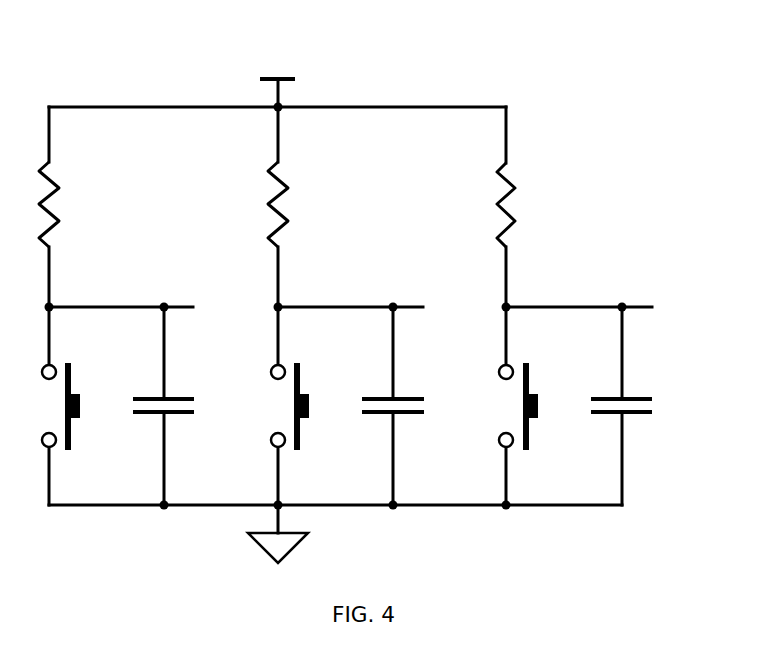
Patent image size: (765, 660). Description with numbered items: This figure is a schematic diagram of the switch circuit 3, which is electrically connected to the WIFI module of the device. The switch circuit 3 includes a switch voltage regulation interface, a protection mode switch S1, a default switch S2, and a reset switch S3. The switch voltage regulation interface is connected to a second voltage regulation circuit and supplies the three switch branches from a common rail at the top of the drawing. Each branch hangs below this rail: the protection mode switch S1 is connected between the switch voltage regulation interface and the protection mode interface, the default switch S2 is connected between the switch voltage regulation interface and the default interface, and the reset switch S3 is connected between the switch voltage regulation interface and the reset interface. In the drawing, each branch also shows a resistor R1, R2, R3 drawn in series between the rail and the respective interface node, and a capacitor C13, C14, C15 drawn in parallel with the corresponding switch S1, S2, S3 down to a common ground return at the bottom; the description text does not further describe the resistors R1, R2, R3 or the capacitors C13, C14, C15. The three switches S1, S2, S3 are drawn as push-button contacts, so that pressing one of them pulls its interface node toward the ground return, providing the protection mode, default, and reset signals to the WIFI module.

The switch circuit 3 is at (230, 48).
The pull-up resistor 10K R1 is at (68, 204).
The pull-up resistor 10K R2 is at (297, 204).
The pull-up resistor 10K R3 is at (526, 205).
The protection mode switch S1 is at (72, 406).
The default switch S2 is at (301, 406).
The reset switch S3 is at (530, 406).
The debounce capacitor 0.1uF C13 is at (192, 417).
The debounce capacitor 0.1uF C14 is at (421, 418).
The debounce capacitor 0.1uF C15 is at (650, 419).